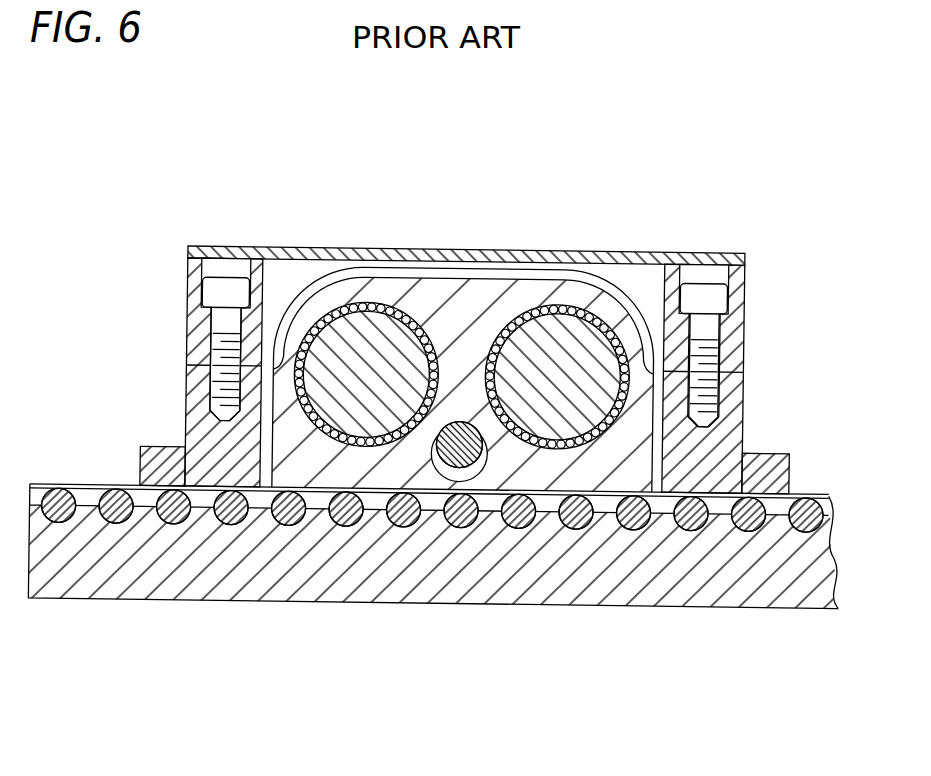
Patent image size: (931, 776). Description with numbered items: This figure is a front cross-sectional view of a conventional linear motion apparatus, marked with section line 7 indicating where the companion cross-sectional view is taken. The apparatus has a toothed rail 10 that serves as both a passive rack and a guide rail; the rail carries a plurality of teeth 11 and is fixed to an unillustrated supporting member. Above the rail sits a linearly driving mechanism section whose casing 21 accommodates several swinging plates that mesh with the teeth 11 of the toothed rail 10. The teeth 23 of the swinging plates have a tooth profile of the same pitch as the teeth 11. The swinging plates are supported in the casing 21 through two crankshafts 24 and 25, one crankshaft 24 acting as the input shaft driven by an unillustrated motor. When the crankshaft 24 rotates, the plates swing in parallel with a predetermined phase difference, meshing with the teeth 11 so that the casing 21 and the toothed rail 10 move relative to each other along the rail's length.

The section line 7- 7 is at (557, 157).
The toothed rail 10 is at (820, 478).
The teeth 11 is at (71, 491).
The casing 21 is at (759, 273).
The teeth 23 is at (382, 512).
The crankshaft 24 is at (543, 320).
The crankshaft 25 is at (384, 320).